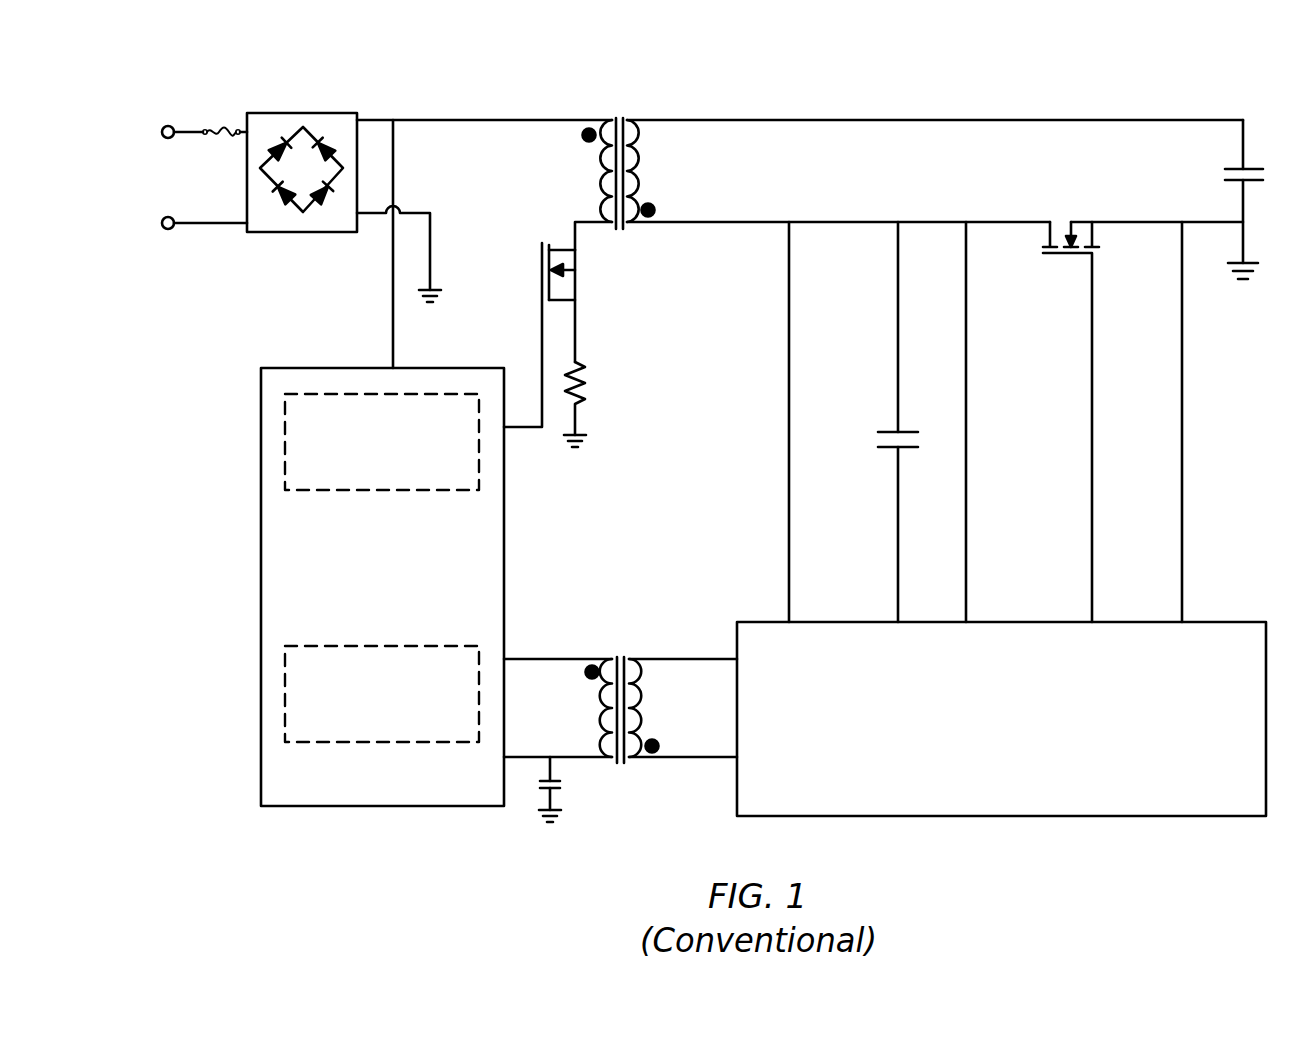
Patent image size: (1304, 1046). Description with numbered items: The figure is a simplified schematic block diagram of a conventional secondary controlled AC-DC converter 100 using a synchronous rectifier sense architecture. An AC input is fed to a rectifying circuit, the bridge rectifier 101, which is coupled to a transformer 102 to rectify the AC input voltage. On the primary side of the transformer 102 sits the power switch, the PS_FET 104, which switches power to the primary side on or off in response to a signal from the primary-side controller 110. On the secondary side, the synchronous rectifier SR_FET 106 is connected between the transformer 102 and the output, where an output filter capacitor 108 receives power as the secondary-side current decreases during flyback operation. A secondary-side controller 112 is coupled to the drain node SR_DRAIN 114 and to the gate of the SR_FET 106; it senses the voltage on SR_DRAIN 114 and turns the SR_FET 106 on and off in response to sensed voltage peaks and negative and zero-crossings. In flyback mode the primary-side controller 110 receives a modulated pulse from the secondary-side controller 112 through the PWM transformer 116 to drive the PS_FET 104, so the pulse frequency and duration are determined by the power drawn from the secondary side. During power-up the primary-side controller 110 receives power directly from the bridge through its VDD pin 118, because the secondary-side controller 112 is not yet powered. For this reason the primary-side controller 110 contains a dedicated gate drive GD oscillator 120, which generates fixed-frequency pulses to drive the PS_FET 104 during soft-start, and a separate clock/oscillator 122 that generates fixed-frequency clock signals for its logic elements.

The AC-DC converter 100 is at (230, 80).
The bridge rectifier 101 is at (301, 233).
The transformer 102 is at (620, 100).
The PS_FET 104 is at (550, 223).
The SR_FET 106 is at (1002, 200).
The capacitor 108 is at (1249, 167).
The primary-side controller 110 is at (484, 794).
The secondary-side controller 112 is at (1096, 784).
The SR_DRAIN 114 is at (935, 406).
The PWM transformer 116 is at (623, 638).
The VDD pin 118 is at (393, 322).
The GD oscillator 120 is at (404, 467).
The clock/oscillator 122 is at (404, 719).